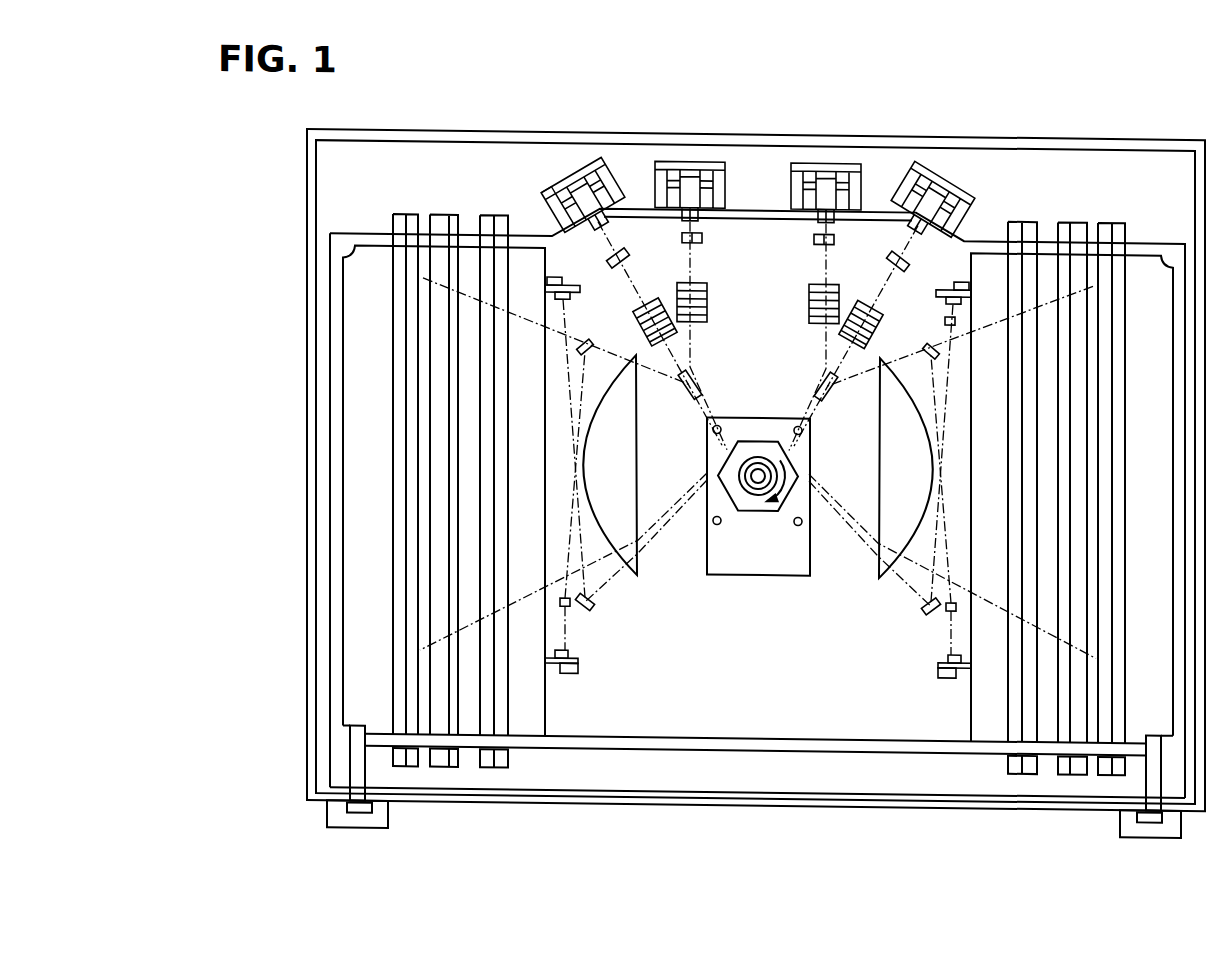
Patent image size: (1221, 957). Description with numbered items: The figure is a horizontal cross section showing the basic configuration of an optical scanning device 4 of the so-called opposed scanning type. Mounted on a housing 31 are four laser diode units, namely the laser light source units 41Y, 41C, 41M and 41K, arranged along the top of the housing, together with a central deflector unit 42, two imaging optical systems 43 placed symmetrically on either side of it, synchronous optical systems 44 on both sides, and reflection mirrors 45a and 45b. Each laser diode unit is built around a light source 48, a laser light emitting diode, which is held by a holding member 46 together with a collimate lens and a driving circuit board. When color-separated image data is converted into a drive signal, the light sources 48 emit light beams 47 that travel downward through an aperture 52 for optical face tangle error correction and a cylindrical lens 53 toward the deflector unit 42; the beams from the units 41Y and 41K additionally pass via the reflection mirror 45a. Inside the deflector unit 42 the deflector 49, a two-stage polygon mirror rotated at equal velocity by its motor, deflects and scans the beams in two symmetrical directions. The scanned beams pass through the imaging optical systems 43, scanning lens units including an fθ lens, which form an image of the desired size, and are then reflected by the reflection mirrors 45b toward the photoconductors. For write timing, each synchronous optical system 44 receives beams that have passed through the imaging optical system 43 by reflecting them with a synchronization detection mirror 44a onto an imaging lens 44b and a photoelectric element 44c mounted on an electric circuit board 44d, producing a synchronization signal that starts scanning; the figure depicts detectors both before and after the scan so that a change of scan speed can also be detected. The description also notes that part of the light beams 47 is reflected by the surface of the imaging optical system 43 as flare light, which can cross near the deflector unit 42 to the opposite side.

The optical scanning device 4 is at (1092, 103).
The housing 31 is at (745, 791).
The laser light source unit 41C is at (552, 167).
The laser light source unit 41Y is at (721, 155).
The laser light source unit 41K is at (858, 153).
The laser light source unit 41M is at (976, 152).
The deflector unit 42 is at (744, 518).
The imaging optical system 43 is at (641, 574).
The synchronous optical system 44 is at (572, 677).
The synchronization detection mirror 44a is at (945, 313).
The imaging lens 44b is at (949, 290).
The photoelectric element 44c is at (940, 282).
The electric circuit board 44d is at (962, 272).
The reflection mirror 45a is at (699, 373).
The reflection mirror 45b is at (488, 260).
The holding member 46 is at (548, 176).
The light beams 47 is at (616, 268).
The light source 48 is at (583, 181).
The deflector 49 is at (774, 516).
The aperture 52 is at (681, 231).
The cylindrical lens 53 is at (677, 287).